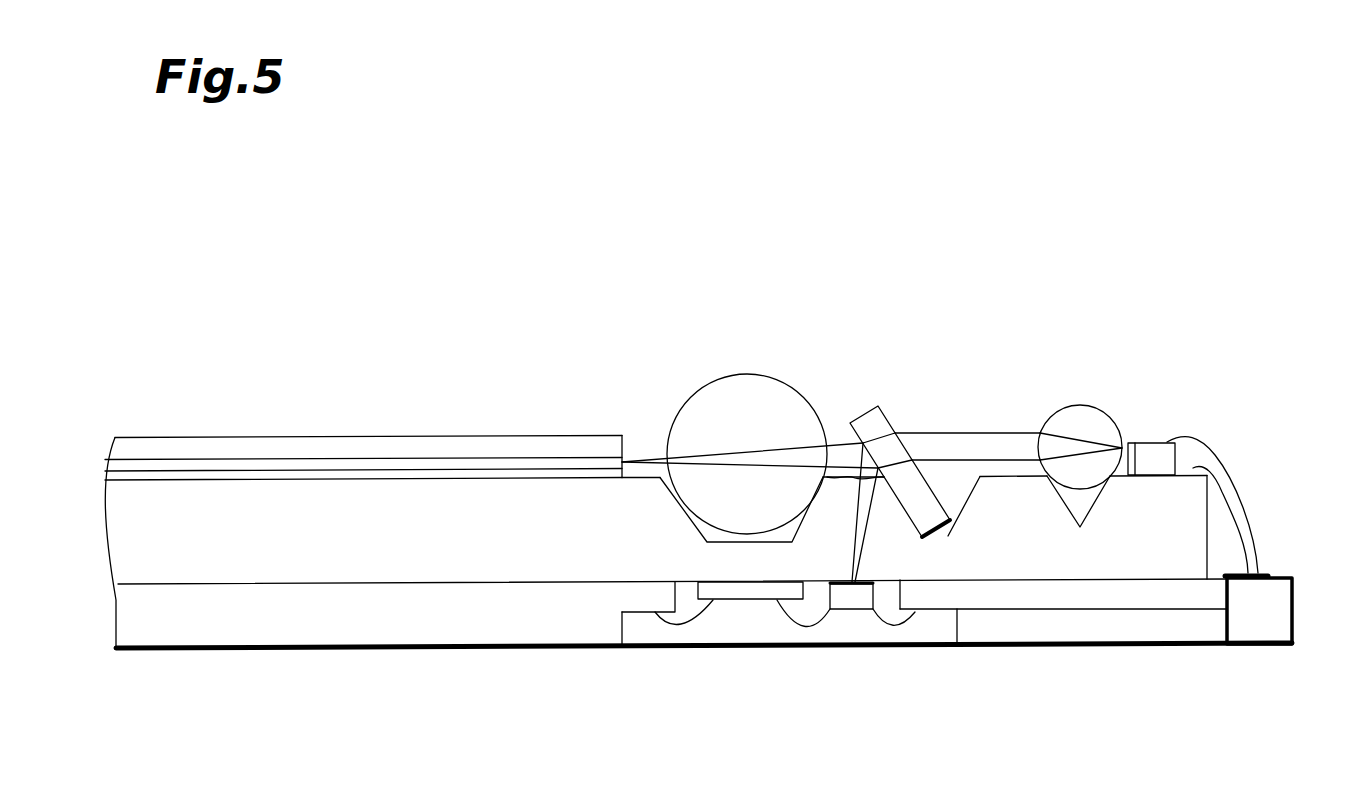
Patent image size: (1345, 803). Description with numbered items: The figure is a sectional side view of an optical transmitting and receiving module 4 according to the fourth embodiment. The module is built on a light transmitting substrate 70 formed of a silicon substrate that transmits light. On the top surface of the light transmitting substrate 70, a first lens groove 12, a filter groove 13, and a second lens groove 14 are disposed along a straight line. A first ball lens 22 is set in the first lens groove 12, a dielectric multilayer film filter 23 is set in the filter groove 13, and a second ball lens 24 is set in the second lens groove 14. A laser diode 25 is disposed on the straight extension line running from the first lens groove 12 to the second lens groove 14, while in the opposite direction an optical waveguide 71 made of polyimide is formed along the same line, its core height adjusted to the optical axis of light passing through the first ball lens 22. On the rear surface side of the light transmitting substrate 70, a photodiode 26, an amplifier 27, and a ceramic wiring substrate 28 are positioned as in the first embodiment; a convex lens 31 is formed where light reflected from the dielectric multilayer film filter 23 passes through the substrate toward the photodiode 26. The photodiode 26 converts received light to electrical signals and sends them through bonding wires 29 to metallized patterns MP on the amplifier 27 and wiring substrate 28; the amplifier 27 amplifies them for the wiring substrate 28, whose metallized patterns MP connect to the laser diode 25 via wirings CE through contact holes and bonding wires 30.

The optical transmitting and receiving module 4 is at (960, 340).
The first lens groove 12 is at (700, 508).
The filter groove 13 is at (962, 489).
The second lens groove 14 is at (1082, 525).
The first ball lens 22 is at (743, 420).
The dielectric multilayer film filter 23 is at (878, 427).
The second ball lens 24 is at (1083, 420).
The laser diode 25 is at (1155, 443).
The photodiode 26 is at (850, 600).
The amplifier 27 is at (757, 592).
The wiring substrate 28 is at (1205, 623).
The bonding wires 29 is at (687, 628).
The bonding wires 30 is at (1250, 505).
The convex lens 31 is at (840, 480).
The light transmitting substrate 70 is at (547, 560).
The optical waveguide 71 is at (524, 460).
The metallized patterns MP is at (638, 613).
The wirings CE is at (1237, 607).